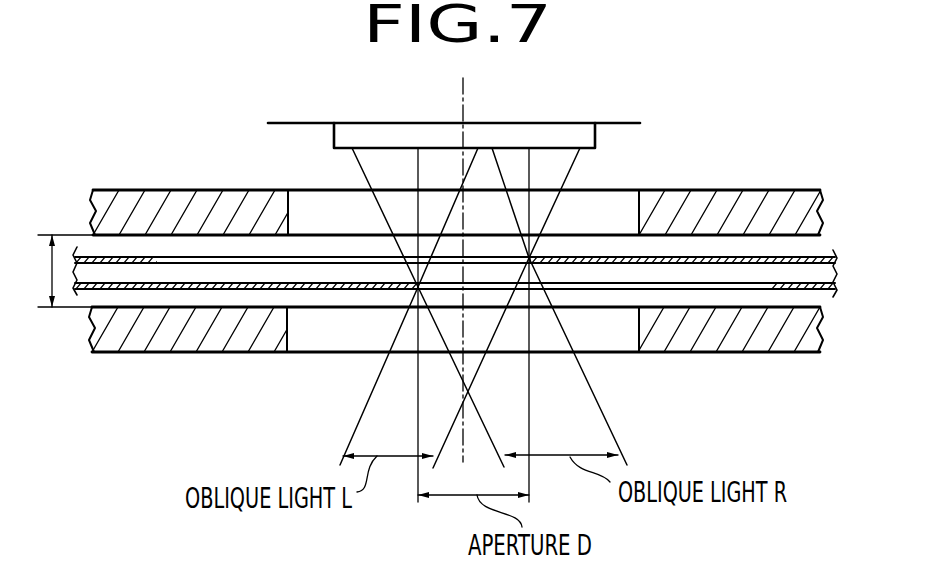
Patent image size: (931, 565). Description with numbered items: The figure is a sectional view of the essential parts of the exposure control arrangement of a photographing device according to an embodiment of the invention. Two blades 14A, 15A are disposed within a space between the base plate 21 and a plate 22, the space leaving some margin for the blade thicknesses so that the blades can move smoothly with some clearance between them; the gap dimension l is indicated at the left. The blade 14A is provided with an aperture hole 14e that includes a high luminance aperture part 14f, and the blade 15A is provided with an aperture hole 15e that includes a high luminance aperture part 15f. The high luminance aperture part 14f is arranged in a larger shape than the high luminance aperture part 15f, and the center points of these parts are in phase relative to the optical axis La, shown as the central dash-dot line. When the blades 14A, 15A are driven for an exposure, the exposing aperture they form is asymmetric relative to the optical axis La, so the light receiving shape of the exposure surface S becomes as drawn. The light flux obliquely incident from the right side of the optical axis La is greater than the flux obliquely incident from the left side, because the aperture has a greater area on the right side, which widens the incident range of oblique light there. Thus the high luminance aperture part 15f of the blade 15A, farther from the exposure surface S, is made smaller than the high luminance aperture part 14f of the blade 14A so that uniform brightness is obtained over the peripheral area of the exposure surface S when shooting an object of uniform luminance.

The base plate 21 is at (178, 215).
The plate 22 is at (187, 333).
The blade 14A is at (743, 260).
The aperture hole 14e is at (337, 258).
The high luminance aperture part 14f is at (487, 257).
The blade 15A is at (797, 290).
The aperture hole 15e is at (605, 283).
The high luminance aperture part 15f is at (443, 290).
The exposure surface S is at (597, 150).
The optical axis La is at (460, 93).
The gap distance l is at (59, 271).